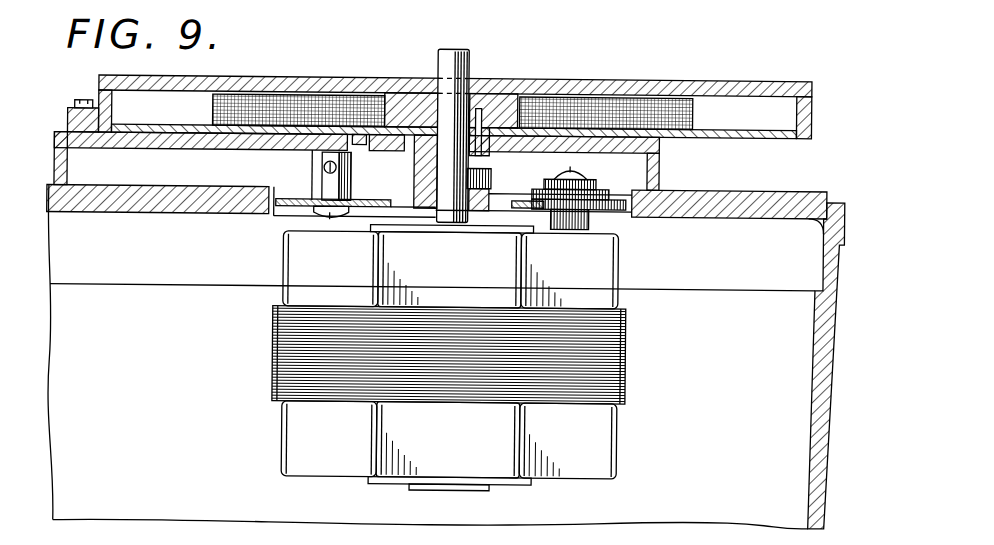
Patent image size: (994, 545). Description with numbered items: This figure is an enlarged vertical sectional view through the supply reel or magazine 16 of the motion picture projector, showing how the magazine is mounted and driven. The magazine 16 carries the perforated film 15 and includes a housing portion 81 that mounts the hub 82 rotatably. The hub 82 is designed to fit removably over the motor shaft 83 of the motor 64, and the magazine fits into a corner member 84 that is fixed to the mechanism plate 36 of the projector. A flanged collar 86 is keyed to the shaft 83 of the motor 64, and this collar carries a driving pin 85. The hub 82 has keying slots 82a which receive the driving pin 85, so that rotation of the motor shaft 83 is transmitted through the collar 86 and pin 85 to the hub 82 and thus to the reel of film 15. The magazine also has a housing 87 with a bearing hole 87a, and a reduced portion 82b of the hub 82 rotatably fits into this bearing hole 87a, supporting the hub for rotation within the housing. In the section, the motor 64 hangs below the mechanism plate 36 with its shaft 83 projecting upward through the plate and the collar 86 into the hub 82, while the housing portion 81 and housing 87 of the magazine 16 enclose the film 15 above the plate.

The perforated film 15 is at (695, 106).
The supply reel or magazine 16 is at (455, 83).
The mechanism plate 36 is at (745, 207).
The motor 64 is at (600, 432).
The housing portion 81 is at (343, 78).
The hub 82 is at (400, 94).
The keying slots 82a is at (481, 95).
The reduced portion 82b is at (517, 123).
The motor shaft 83 is at (467, 47).
The corner member 84 is at (73, 117).
The driving pin 85 is at (483, 117).
The flanged collar 86 is at (492, 157).
The housing 87 is at (722, 136).
The bearing hole 87a is at (400, 150).